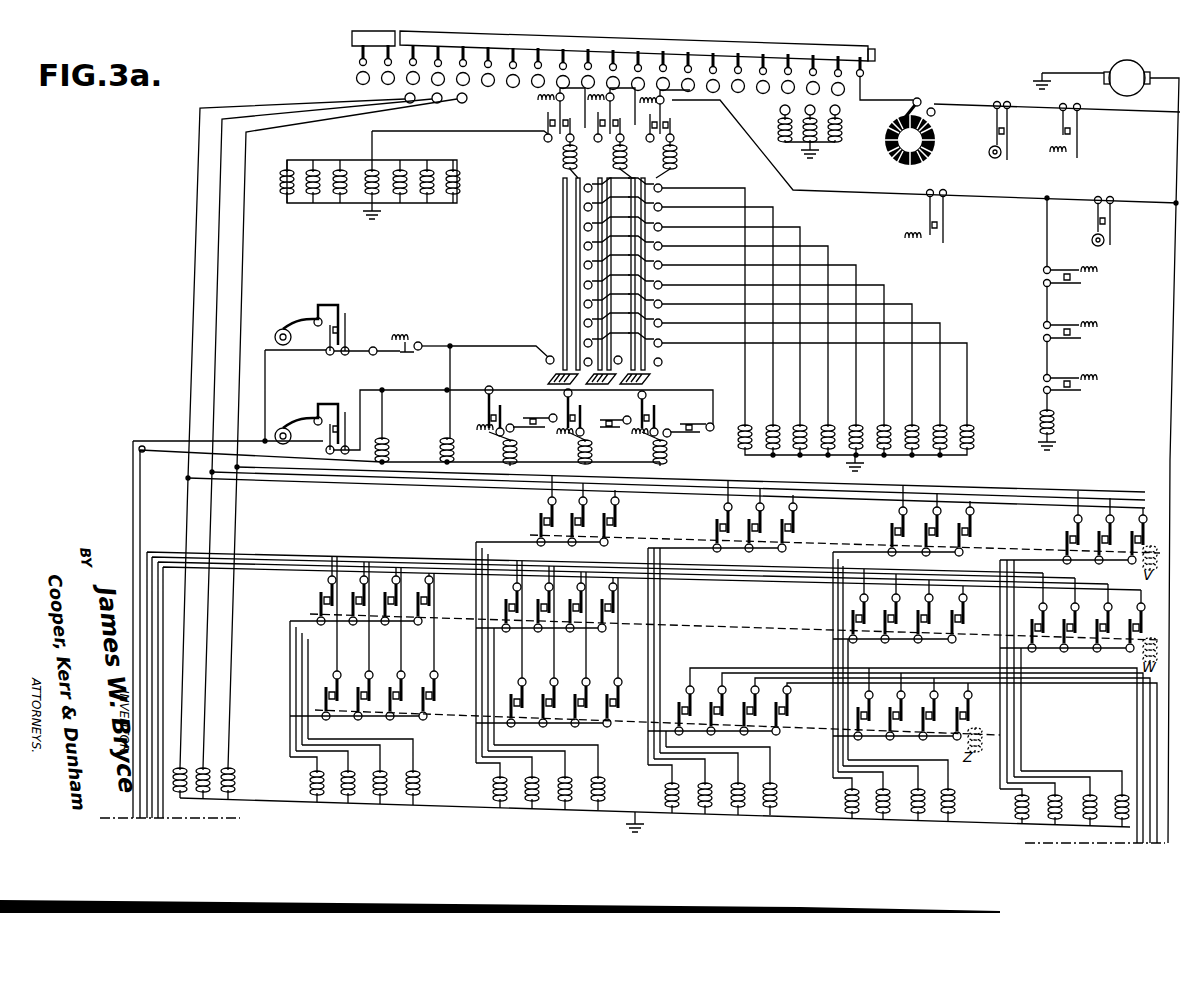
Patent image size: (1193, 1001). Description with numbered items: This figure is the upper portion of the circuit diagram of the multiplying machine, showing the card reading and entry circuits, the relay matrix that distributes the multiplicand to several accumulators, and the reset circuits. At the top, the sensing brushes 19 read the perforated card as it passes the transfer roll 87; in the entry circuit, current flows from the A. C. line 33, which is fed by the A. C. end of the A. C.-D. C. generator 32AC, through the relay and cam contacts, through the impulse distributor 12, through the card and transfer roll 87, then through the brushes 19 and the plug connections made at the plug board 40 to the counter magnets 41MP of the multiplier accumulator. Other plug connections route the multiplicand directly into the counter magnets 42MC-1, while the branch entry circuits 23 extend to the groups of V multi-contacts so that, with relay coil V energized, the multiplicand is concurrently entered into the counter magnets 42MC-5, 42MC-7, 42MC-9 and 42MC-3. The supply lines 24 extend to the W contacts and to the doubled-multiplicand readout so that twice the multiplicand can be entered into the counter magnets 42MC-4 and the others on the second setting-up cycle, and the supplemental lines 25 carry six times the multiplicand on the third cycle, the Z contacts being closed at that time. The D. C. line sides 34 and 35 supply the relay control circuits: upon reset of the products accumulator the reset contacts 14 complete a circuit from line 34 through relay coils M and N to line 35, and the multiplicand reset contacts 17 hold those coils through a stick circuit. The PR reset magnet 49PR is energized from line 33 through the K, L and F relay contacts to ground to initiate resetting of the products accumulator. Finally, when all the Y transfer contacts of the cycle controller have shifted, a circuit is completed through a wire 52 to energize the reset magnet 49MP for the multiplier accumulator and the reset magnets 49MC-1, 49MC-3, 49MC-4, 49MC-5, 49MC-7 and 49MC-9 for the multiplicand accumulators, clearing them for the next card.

The sensing brushes 19 is at (385, 60).
The transfer roll 87 is at (866, 52).
The plug board 40 is at (405, 97).
The wire 52 is at (415, 135).
The impulse distributor 12 is at (893, 160).
The A. C.-D. C. generator 32AC is at (1122, 82).
The A. C. line 33 is at (1176, 177).
The D. C. line 34 is at (133, 441).
The D. C. line 35 is at (145, 447).
The branch entry circuits 23 is at (372, 479).
The supply lines 24 is at (160, 552).
The supplemental lines 25 is at (815, 668).
The multiplicand reset contacts 17 is at (342, 340).
The reset contacts of the PR accumulator 14 is at (338, 420).
The reset magnet for the multiplier accumulator 49MP is at (280, 200).
The reset magnet for the MC-1 multiplicand accumulator 49MC-1 is at (310, 202).
The reset magnet for the MC-3 multiplicand accumulator 49MC-3 is at (338, 200).
The reset magnet for the MC-4 multiplicand accumulator 49MC-4 is at (374, 200).
The reset magnet for the MC-5 multiplicand accumulator 49MC-5 is at (400, 200).
The reset magnet for the MC-7 multiplicand accumulator 49MC-7 is at (428, 200).
The reset magnet for the MC-9 multiplicand accumulator 49MC-9 is at (455, 200).
The counter magnets of the MP accumulator 41MP is at (850, 152).
The PR reset magnet 49PR is at (1050, 426).
The counter magnets of the MC-1 accumulator 42MC-1 is at (240, 790).
The counter magnets of the MC-3 accumulator 42MC-3 is at (1075, 832).
The counter magnets of the MC-4 accumulator 42MC-4 is at (365, 807).
The counter magnets of the MC-5 accumulator 42MC-5 is at (548, 814).
The counter magnets of the MC-7 accumulator 42MC-7 is at (725, 819).
The counter magnets of the MC-9 accumulator 42MC-9 is at (905, 826).